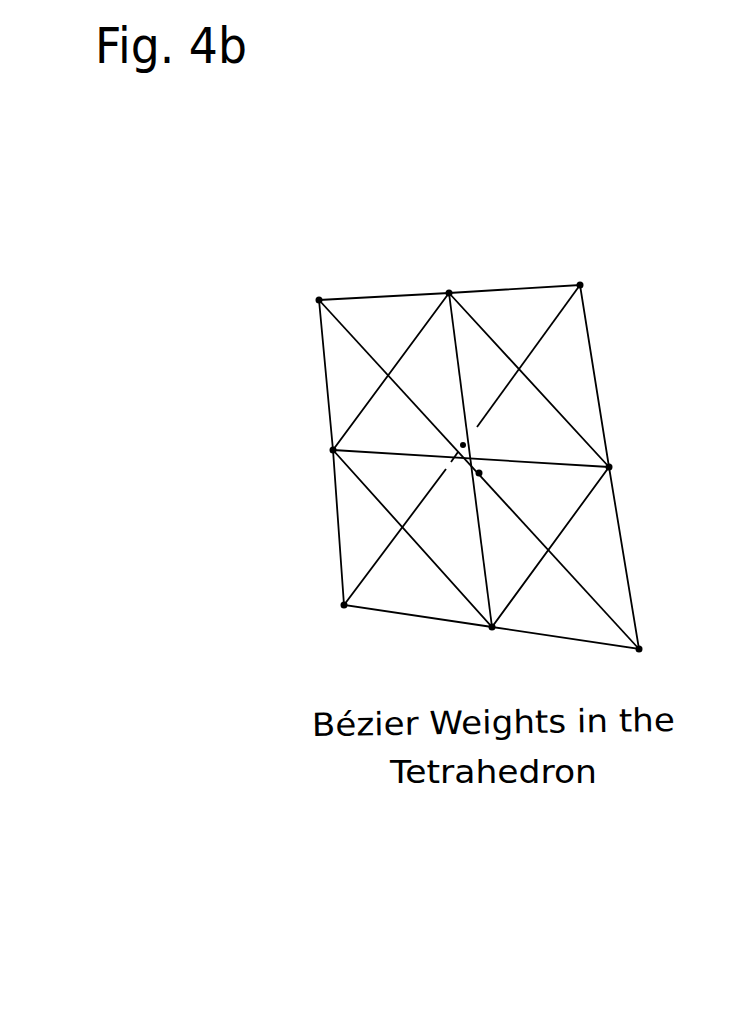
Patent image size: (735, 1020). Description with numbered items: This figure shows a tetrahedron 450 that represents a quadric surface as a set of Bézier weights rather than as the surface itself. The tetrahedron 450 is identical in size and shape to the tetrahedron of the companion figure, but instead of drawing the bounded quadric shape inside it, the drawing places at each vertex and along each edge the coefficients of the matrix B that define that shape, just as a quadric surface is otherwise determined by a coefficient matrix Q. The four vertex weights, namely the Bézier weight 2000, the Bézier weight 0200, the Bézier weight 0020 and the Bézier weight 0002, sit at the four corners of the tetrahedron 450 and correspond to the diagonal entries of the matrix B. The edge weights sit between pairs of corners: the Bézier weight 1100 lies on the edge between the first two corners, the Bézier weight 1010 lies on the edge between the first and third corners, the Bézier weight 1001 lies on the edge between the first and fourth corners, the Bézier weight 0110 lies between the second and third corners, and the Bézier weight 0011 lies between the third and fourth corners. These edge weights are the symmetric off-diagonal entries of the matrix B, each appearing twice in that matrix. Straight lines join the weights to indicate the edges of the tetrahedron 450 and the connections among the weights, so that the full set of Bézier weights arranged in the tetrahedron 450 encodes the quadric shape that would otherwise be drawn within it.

The tetrahedron 450 is at (279, 228).
The Bézier weight b2000 2000 is at (310, 288).
The Bézier weight b1001 1001 is at (457, 280).
The Bézier weight b0002 0002 is at (585, 274).
The Bézier weight b1100 1100 is at (306, 445).
The Bézier weight b1010 1010 is at (458, 428).
The Bézier weight b0011 0011 is at (638, 470).
The Bézier weight b0200 0200 is at (348, 618).
The Bézier weight b0110 0110 is at (498, 640).
The Bézier weight b0020 0020 is at (667, 656).